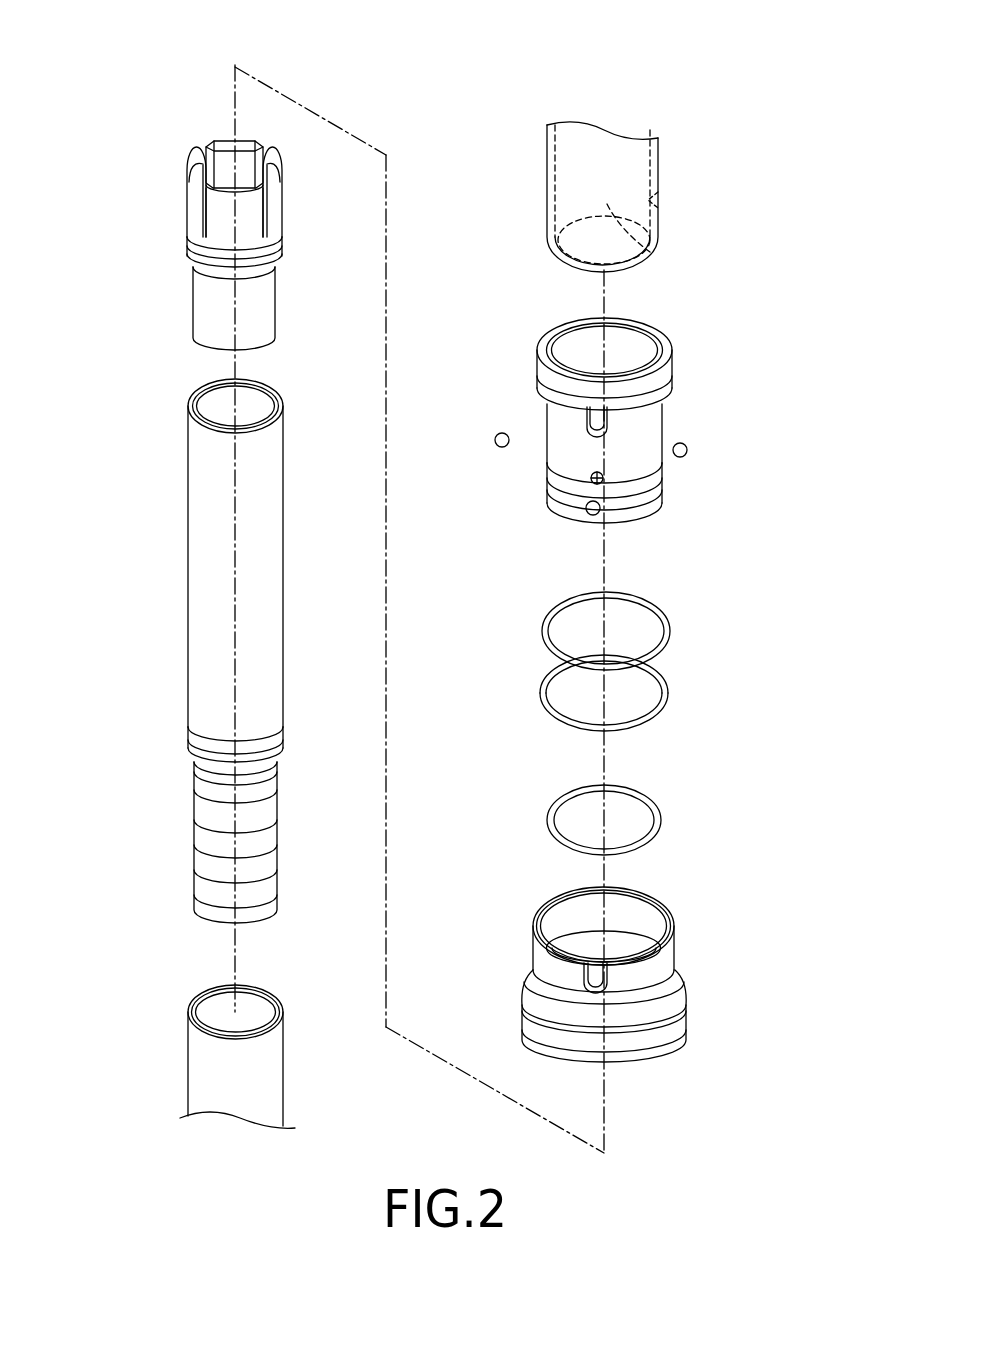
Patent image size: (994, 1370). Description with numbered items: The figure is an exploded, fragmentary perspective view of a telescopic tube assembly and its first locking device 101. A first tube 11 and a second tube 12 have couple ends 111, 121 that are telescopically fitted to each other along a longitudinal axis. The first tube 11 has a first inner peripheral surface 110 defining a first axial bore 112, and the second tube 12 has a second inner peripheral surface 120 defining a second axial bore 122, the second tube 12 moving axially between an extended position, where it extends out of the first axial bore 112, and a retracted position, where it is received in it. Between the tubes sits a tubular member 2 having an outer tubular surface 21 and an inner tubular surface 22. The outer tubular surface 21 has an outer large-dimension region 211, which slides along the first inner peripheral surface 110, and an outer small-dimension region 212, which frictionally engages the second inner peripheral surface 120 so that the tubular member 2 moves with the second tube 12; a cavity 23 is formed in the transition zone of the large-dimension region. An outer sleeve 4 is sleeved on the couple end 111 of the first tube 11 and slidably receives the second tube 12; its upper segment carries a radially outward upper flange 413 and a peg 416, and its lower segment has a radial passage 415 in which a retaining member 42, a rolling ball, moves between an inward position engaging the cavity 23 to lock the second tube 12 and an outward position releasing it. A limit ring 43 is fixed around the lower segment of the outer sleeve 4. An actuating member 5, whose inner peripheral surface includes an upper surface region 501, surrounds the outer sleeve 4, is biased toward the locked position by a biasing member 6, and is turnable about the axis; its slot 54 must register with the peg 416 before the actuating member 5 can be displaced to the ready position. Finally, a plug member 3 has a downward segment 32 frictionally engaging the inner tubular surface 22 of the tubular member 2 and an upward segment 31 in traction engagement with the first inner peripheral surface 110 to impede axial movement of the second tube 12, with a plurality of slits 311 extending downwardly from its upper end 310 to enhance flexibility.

The first locking device 101 is at (766, 584).
The first tube 11 is at (657, 197).
The first inner peripheral surface 110 is at (648, 212).
The couple end 111 is at (659, 196).
The first axial bore 112 is at (651, 256).
The second tube 12 is at (197, 1036).
The second inner peripheral surface 120 is at (268, 998).
The couple end 121 is at (284, 1068).
The second axial bore 122 is at (205, 1005).
The tubular member 2 is at (193, 639).
The outer tubular surface 21 is at (193, 664).
The outer large-dimension region 211 is at (197, 650).
The outer small-dimension region 212 is at (201, 806).
The inner tubular surface 22 is at (262, 392).
The cavity 23 is at (276, 746).
The plug member 3 is at (215, 210).
The upward segment 31 is at (231, 168).
The upper end 310 is at (220, 138).
The slits 311 is at (196, 149).
The downward segment 32 is at (194, 294).
The outer sleeve 4 is at (598, 419).
The upper flange 413 is at (668, 398).
The passage 415 is at (604, 482).
The peg 416 is at (592, 420).
The retaining member 42 is at (688, 450).
The limit ring 43 is at (549, 812).
The actuating member 5 is at (607, 966).
The upper surface region 501 is at (570, 910).
The slot 54 is at (594, 975).
The biasing member 6 is at (546, 616).